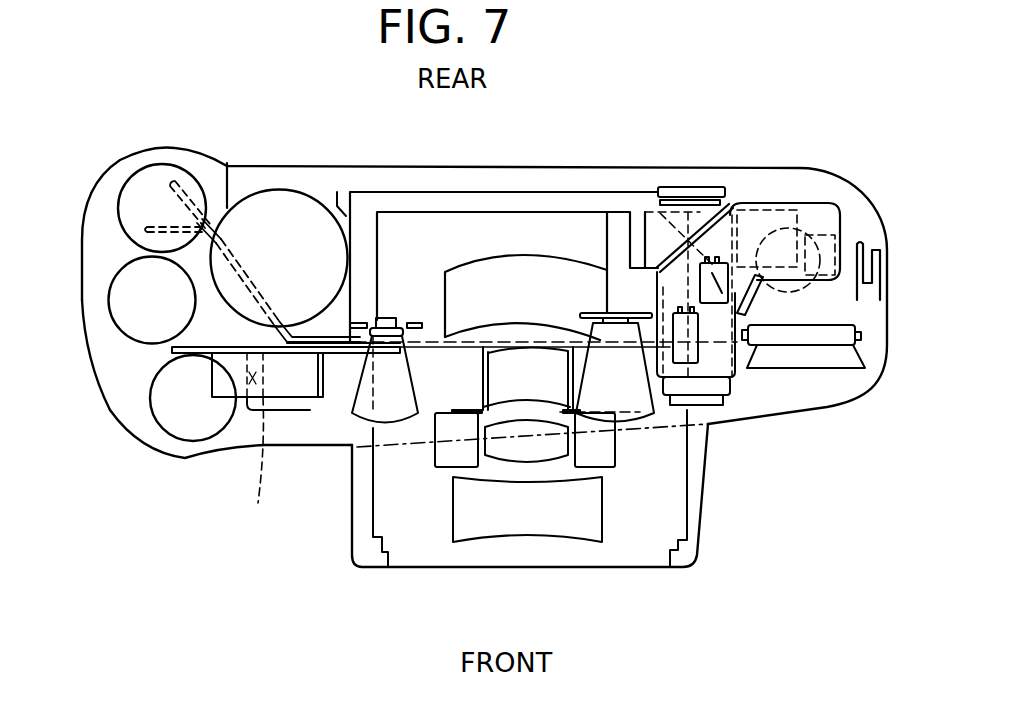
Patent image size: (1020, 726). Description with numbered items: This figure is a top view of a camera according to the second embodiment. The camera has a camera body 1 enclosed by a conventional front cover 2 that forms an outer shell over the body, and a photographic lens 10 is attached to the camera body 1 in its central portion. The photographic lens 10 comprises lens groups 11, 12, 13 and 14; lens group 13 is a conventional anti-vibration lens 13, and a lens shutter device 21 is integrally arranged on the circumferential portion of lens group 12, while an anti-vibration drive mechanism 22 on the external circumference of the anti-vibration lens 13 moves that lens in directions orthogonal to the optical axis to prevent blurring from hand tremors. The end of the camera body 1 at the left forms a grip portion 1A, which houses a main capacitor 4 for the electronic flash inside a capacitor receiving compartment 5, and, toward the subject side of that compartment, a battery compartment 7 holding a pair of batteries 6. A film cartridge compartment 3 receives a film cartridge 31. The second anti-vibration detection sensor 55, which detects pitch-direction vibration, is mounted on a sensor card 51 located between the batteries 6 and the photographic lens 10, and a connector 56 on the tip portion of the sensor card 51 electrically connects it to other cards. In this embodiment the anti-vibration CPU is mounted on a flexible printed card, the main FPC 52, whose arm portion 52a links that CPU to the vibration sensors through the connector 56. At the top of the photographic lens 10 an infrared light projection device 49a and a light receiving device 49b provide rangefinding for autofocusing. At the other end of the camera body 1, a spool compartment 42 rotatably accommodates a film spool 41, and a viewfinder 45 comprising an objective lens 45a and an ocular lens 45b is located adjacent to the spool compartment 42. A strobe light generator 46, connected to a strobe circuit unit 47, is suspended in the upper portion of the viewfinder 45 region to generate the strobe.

The camera body 1 is at (382, 160).
The grip portion 1A is at (142, 155).
The front cover 2 is at (82, 298).
The film cartridge compartment 3 is at (238, 178).
The main capacitor 4 is at (137, 195).
The capacitor receiving compartment 5 is at (100, 242).
The batteries 6 is at (132, 330).
The battery compartment 7 is at (133, 382).
The photographic lens 10 is at (405, 552).
The lens group 11 is at (580, 530).
The lens group 12 is at (557, 450).
The anti-vibration lens 13 is at (522, 390).
The lens group 14 is at (527, 280).
The lens shutter device 21 is at (610, 460).
The anti-vibration drive mechanism 22 is at (428, 403).
The film cartridge 31 is at (287, 197).
The film spool 41 is at (775, 233).
The spool compartment 42 is at (850, 297).
The viewfinder 45 is at (720, 383).
The objective lens 45a is at (717, 407).
The ocular lens 45b is at (715, 190).
The strobe light generator 46 is at (850, 363).
The strobe circuit unit 47 is at (815, 212).
The infrared light projection device 49a is at (600, 322).
The light receiving device 49b is at (390, 320).
The sensor card 51 is at (347, 447).
The main FPC 52 is at (303, 410).
The arm portion 52a is at (271, 471).
The second anti-vibration detection sensor 55 is at (222, 392).
The connector 56 is at (247, 397).